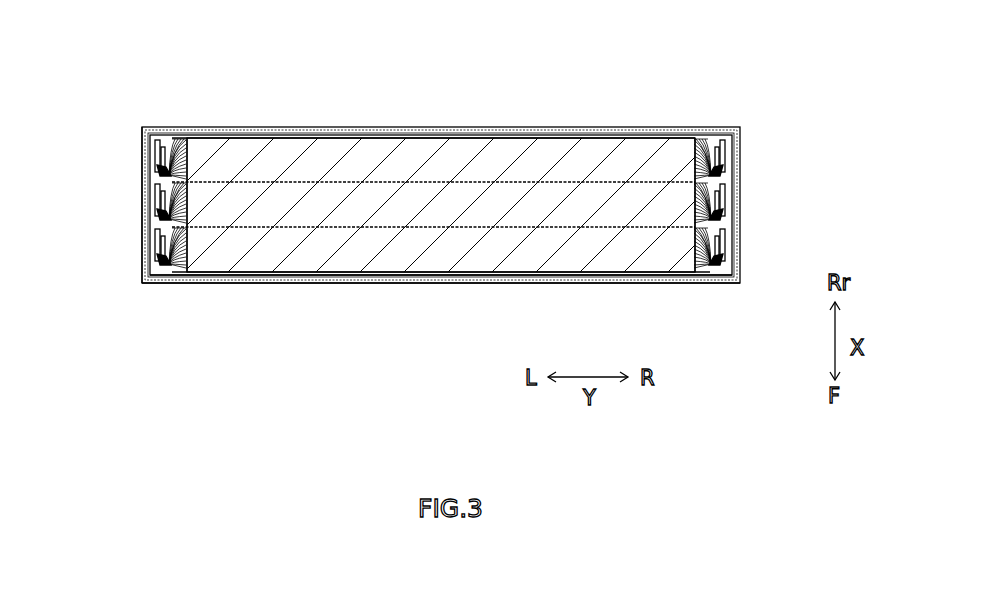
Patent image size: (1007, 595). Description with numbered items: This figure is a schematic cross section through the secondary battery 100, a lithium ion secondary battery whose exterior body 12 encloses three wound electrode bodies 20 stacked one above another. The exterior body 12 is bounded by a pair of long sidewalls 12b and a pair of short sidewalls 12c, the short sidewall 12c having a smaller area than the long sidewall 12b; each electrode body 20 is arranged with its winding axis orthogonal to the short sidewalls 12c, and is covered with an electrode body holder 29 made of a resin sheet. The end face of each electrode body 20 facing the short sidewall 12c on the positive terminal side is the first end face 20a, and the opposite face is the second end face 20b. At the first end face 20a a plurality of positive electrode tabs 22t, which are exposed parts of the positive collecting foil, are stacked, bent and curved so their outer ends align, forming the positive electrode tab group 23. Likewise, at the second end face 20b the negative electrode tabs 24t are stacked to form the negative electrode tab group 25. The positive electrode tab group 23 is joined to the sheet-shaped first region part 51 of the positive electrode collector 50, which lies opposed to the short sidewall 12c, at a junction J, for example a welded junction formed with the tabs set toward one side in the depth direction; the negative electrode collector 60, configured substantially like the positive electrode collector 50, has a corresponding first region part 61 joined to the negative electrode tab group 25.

The secondary battery 100 is at (669, 62).
The exterior body 12 is at (565, 122).
The long sidewall 12b is at (338, 284).
The short sidewall 12c is at (142, 276).
The electrode body 20 is at (280, 160).
The first end face 20a is at (160, 276).
The second end face 20b is at (720, 284).
The positive electrode tab 22t is at (174, 139).
The negative electrode tab 24t is at (706, 139).
The positive electrode tab group 23 is at (185, 296).
The negative electrode tab group 25 is at (723, 296).
The electrode body holder 29 is at (264, 284).
The positive electrode collector 50 is at (101, 154).
The first region part 51 is at (156, 148).
The negative electrode collector 60 is at (790, 149).
The first region part 61 is at (724, 146).
The junction J is at (159, 169).